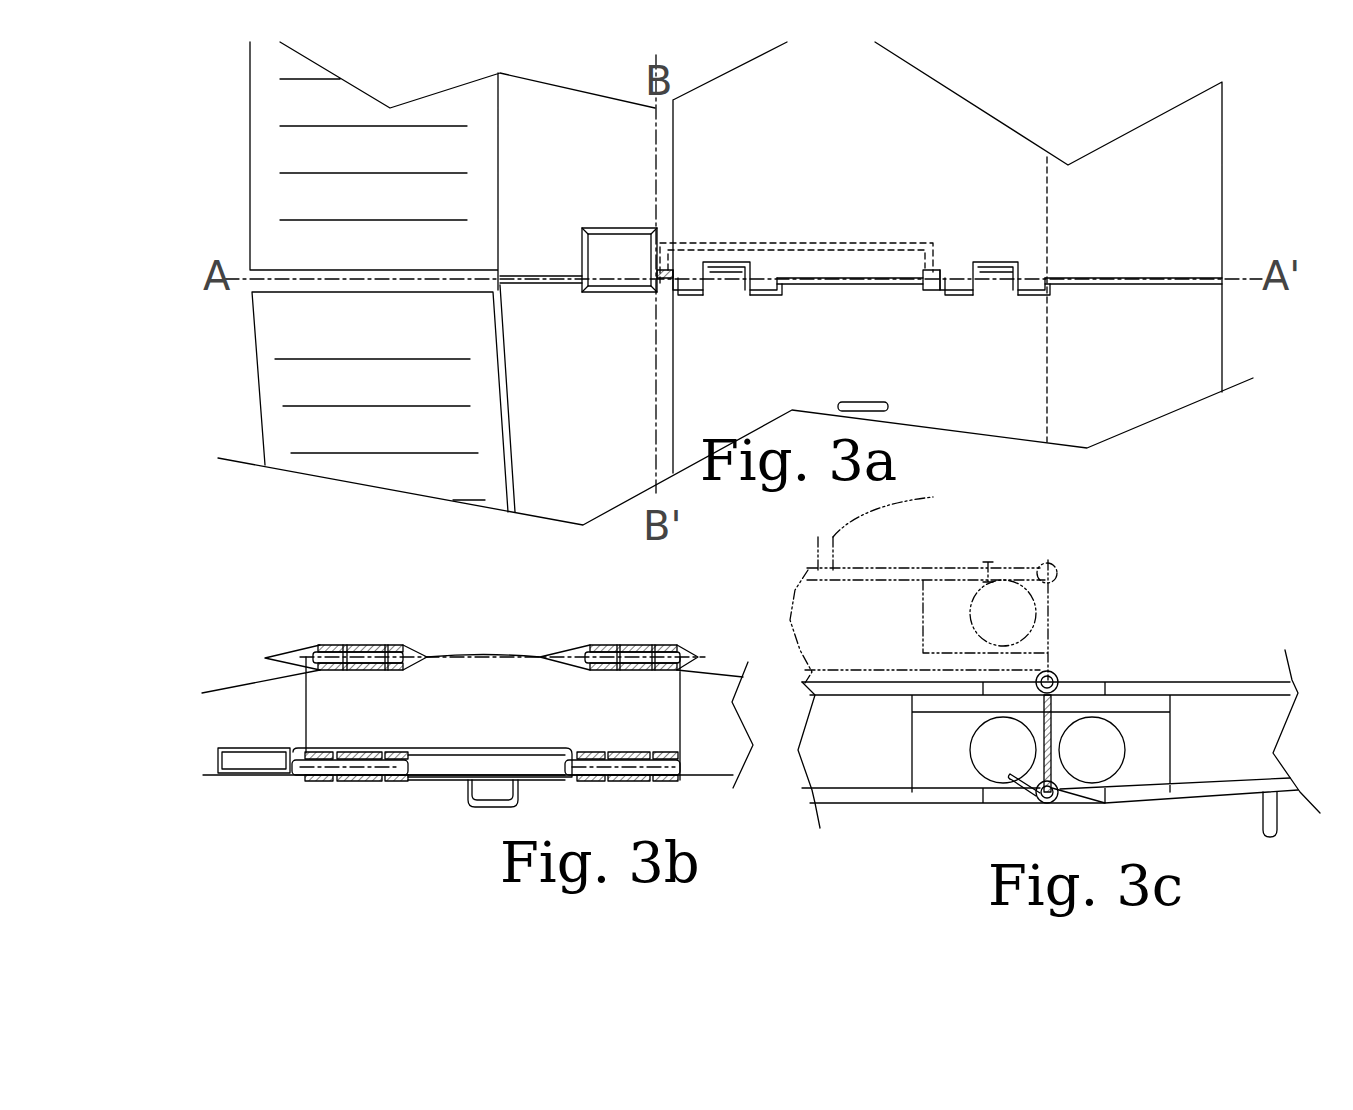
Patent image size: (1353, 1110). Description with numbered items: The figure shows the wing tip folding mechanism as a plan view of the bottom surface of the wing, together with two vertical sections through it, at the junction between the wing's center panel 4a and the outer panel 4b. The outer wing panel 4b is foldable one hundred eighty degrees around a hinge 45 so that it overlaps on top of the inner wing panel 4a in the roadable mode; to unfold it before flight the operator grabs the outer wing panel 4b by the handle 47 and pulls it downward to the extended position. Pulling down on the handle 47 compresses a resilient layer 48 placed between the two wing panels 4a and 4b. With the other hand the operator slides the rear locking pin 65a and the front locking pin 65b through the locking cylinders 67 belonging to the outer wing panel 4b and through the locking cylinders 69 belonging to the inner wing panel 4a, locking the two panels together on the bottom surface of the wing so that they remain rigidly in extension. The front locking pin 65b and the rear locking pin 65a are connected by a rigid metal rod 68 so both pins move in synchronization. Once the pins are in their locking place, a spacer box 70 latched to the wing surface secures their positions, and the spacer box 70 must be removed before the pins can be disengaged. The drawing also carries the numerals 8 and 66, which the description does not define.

In FIG. 3a, the center wing panel 4a is at (1242, 148).
In FIG. 3c, the center wing panel 4a is at (880, 822).
In FIG. 3a, the outer wing panel 4b is at (1183, 430).
In FIG. 3c, the outer wing panel 4b is at (1205, 815).
In FIG. 3a, the hull panel 8 is at (398, 421).
In FIG. 3b, the hinge 45 is at (378, 645).
In FIG. 3c, the hinge 45 is at (1055, 675).
In FIG. 3a, the handle 47 is at (890, 405).
In FIG. 3b, the handle 47 is at (480, 808).
In FIG. 3c, the handle 47 is at (933, 497).
In FIG. 3a, the resilient layer 48 is at (528, 292).
In FIG. 3c, the resilient layer 48 is at (1052, 722).
In FIG. 3a, the rear locking pin 65a is at (667, 296).
In FIG. 3b, the rear locking pin 65a is at (360, 765).
In FIG. 3c, the rear locking pin 65a is at (1052, 802).
In FIG. 3a, the front locking pin 65b is at (937, 290).
In FIG. 3b, the front locking pin 65b is at (668, 762).
In FIG. 3a, the end bushing 66 is at (680, 297).
In FIG. 3b, the end bushing 66 is at (313, 782).
In FIG. 3c, the end bushing 66 is at (1040, 802).
In FIG. 3a, the locking cylinder 67 is at (725, 275).
In FIG. 3b, the locking cylinder 67 is at (350, 782).
In FIG. 3c, the locking cylinder 67 is at (1060, 570).
In FIG. 3a, the rigid metal rod 68 is at (740, 248).
In FIG. 3b, the rigid metal rod 68 is at (435, 750).
In FIG. 3c, the rigid metal rod 68 is at (1012, 781).
In FIG. 3a, the locking cylinder 69 is at (773, 287).
In FIG. 3b, the locking cylinder 69 is at (395, 782).
In FIG. 3a, the spacer box 70 is at (638, 292).
In FIG. 3b, the spacer box 70 is at (220, 775).